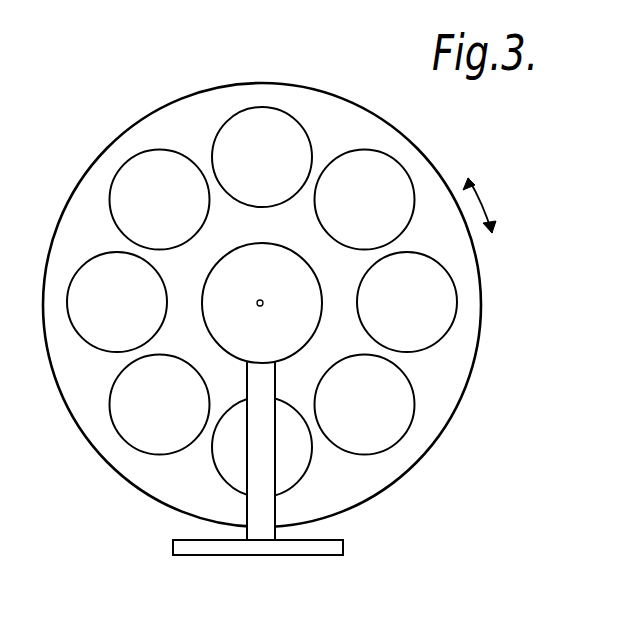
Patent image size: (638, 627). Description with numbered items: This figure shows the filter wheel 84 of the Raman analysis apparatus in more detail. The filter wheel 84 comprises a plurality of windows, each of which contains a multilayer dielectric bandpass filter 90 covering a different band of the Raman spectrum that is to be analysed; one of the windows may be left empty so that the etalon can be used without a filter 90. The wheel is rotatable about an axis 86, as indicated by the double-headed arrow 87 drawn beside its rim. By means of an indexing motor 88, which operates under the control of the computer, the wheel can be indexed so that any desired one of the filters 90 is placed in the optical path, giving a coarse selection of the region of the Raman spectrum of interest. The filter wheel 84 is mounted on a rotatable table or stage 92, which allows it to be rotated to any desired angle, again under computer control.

The filter wheel 84 is at (427, 453).
The axis 86 is at (263, 308).
The arrow 87 is at (480, 203).
The indexing motor 88 is at (207, 328).
The multilayer dielectric bandpass filter 90 is at (218, 150).
The rotatable table or stage 92 is at (305, 555).